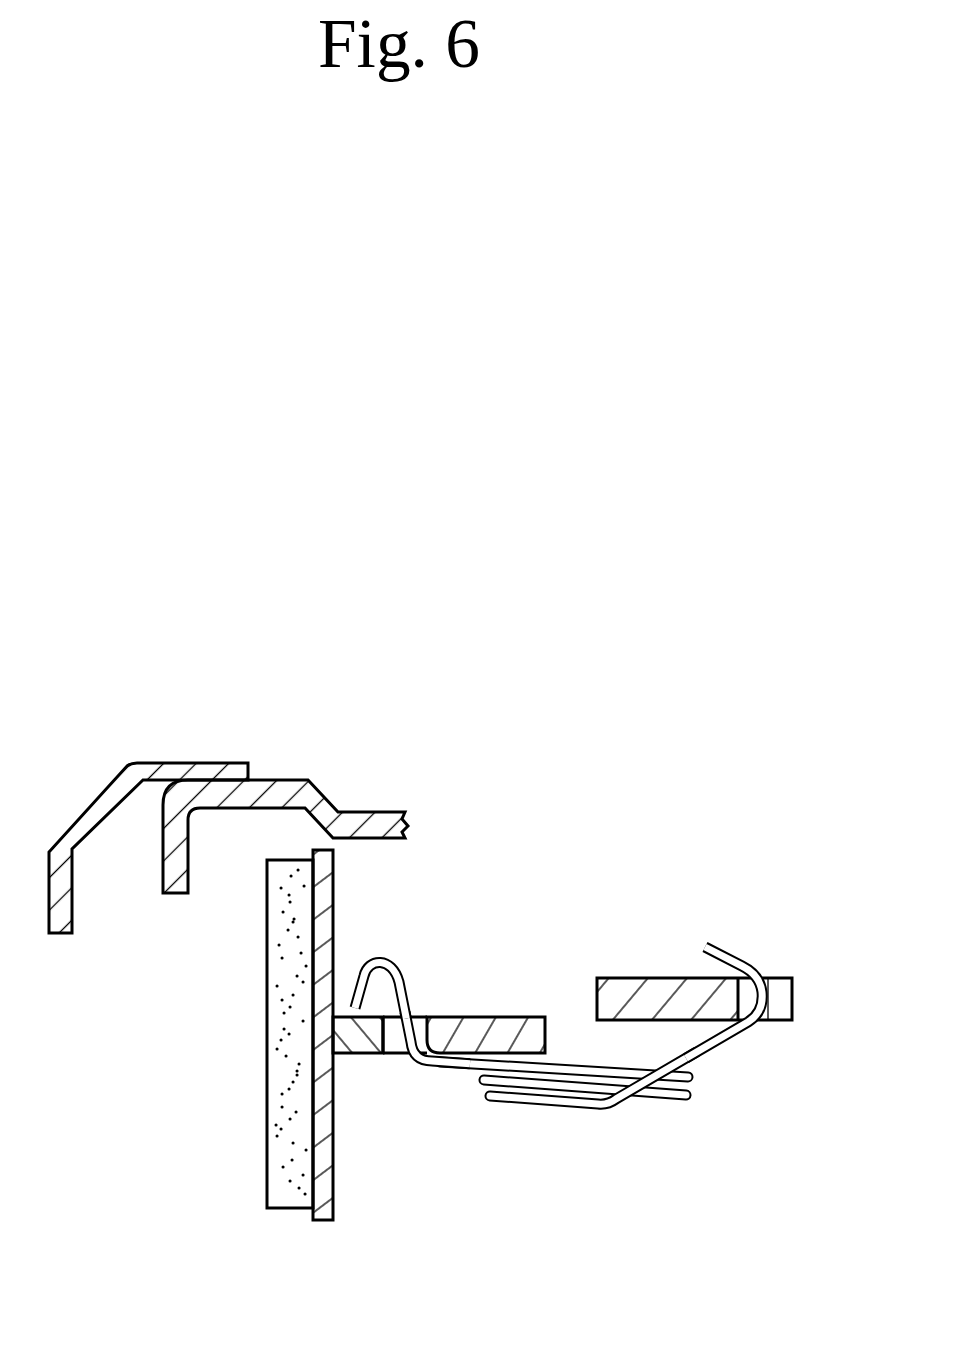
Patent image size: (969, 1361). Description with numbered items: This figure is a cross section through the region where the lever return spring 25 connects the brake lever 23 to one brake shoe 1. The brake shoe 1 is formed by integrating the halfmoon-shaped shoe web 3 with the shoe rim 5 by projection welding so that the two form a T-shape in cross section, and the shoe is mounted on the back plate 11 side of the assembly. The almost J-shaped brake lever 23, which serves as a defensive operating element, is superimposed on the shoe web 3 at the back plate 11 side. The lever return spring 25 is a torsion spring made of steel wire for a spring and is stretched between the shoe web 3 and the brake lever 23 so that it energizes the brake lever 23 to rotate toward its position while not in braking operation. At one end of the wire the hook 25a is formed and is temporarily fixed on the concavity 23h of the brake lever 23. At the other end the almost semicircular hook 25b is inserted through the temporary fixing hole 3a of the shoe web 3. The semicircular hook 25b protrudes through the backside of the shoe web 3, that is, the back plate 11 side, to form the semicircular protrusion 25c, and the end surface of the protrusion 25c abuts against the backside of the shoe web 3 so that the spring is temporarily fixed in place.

The brake shoe 1 is at (251, 1109).
The shoe web 3 is at (520, 1017).
The temporary fixing hole 3a is at (385, 1028).
The shoe rim 5 is at (333, 1178).
The back plate 11 is at (333, 768).
The brake lever 23 is at (660, 985).
The concavity 23h is at (791, 1000).
The lever return spring 25 is at (586, 1045).
The hook 25a is at (765, 975).
The semicircular hook 25b is at (416, 1066).
The semicircular protrusion 25c is at (380, 953).